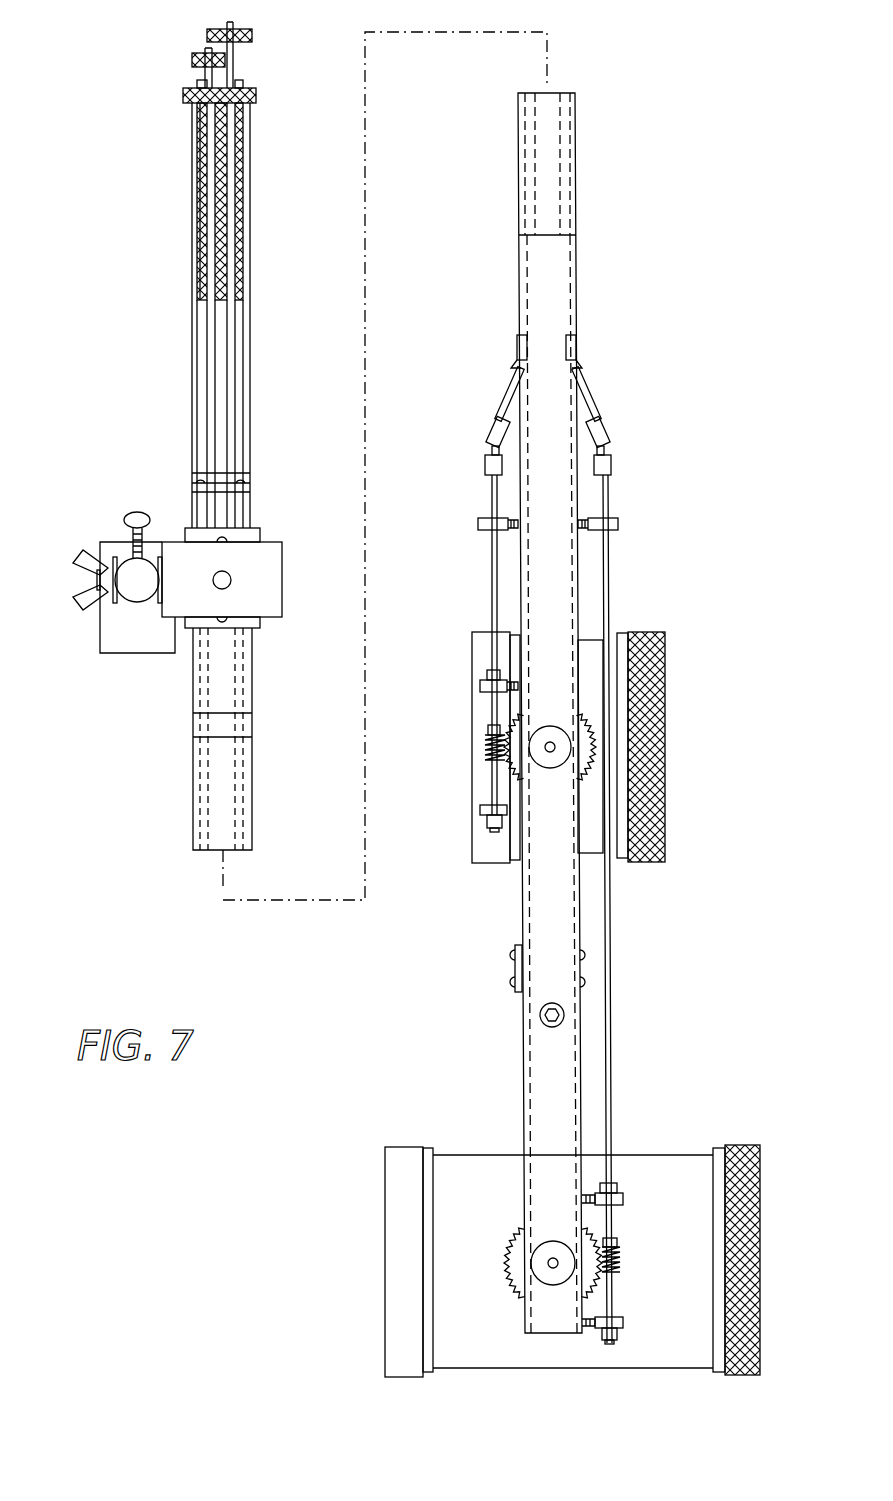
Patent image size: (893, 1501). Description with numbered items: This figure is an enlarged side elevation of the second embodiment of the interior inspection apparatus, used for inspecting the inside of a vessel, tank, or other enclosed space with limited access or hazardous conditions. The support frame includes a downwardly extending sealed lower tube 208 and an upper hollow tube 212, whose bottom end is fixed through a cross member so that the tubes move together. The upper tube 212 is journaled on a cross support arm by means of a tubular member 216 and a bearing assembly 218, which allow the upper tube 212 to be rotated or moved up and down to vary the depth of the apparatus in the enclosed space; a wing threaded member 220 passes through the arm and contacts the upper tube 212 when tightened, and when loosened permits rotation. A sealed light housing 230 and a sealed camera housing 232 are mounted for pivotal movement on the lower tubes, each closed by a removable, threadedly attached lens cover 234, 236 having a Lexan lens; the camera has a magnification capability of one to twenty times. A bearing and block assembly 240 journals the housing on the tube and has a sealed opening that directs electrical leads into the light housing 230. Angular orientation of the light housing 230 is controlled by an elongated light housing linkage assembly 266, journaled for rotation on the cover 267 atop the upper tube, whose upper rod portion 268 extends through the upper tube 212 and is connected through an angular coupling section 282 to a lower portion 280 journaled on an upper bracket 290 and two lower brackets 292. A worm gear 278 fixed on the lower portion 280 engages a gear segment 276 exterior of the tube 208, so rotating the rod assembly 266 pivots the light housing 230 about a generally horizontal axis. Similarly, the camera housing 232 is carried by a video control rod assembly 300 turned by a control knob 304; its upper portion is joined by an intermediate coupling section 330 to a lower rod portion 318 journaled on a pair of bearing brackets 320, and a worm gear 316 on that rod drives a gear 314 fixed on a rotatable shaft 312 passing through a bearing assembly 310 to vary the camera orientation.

The lower tube 208 is at (248, 787).
The upper hollow tube 212 is at (250, 403).
The tubular member 216 is at (255, 580).
The bearing assembly 218 is at (260, 528).
The wing threaded member 220 is at (85, 603).
The light housing 230 is at (620, 633).
The camera housing 232 is at (637, 1162).
The lens cover 234 is at (657, 700).
The lens cover 236 is at (745, 1145).
The bearing and block assembly 240 is at (548, 728).
The light housing linkage assembly 266 is at (507, 400).
The cover 267 is at (244, 80).
The upper rod portion 268 is at (207, 375).
The gear segment 276 is at (588, 750).
The worm gear 278 is at (487, 740).
The lower portion of rod assembly 280 is at (488, 577).
The angular coupling section 282 is at (490, 423).
The upper bracket 290 is at (478, 522).
The lower brackets 292 is at (480, 688).
The video control rod assembly 300 is at (605, 388).
The control knob 304 is at (252, 35).
The bearing assembly 310 is at (540, 1258).
The rotatable shaft 312 is at (553, 1253).
The gear 314 is at (508, 1273).
The worm gear 316 is at (620, 1265).
The lower rod portion 318 is at (610, 915).
The bearing brackets 320 is at (623, 1200).
The intermediate coupling section 330 is at (596, 407).